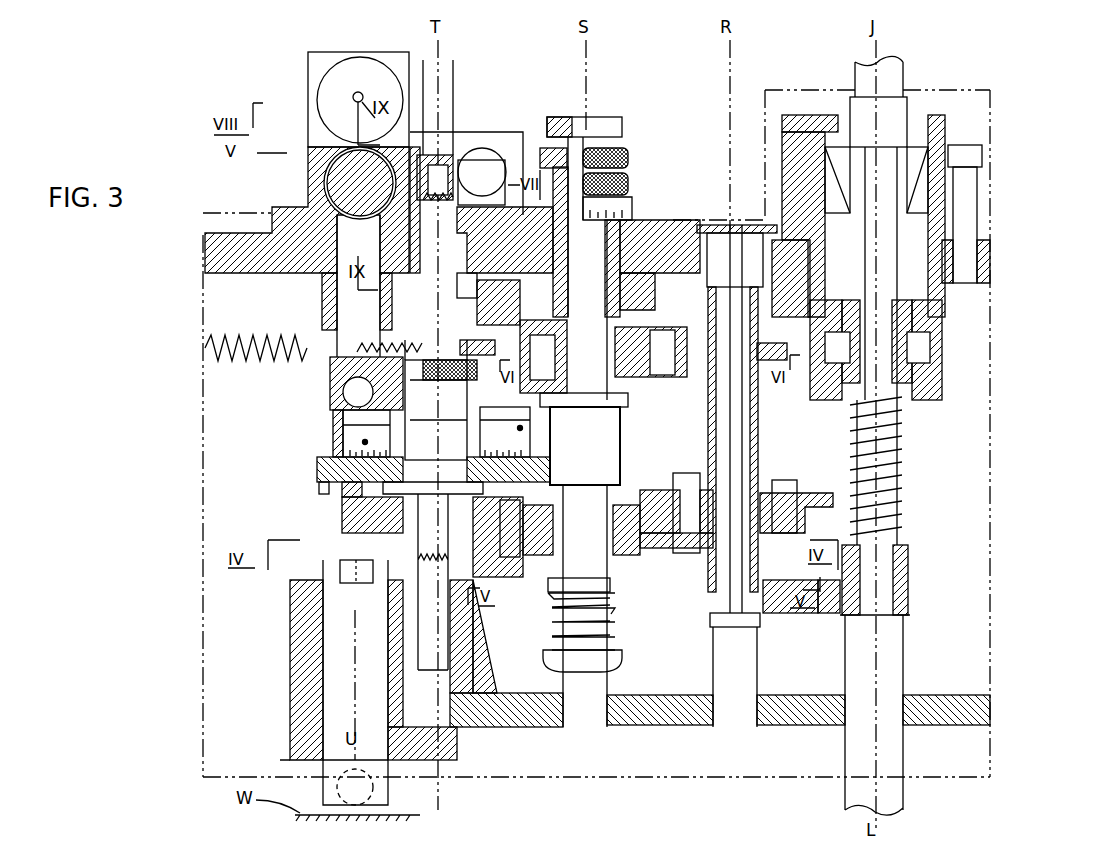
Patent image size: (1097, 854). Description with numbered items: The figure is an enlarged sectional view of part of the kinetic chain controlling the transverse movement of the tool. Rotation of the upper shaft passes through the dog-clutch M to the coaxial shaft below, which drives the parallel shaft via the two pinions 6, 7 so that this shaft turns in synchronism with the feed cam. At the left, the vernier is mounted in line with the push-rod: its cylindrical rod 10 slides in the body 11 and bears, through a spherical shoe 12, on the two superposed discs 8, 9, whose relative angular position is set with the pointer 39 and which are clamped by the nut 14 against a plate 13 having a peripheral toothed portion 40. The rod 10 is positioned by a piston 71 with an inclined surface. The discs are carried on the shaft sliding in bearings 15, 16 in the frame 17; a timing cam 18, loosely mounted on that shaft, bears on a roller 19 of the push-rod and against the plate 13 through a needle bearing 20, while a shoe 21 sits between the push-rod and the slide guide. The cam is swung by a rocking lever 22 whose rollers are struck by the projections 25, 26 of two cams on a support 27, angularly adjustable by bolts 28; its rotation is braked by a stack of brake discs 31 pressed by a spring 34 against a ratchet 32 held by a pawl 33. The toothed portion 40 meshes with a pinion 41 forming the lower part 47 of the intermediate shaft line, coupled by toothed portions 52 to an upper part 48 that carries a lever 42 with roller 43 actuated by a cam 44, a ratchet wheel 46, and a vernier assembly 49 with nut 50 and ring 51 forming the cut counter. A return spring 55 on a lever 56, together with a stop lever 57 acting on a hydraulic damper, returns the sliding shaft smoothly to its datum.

The pinion 6 is at (910, 598).
The pinion 7 is at (830, 613).
The disc 8 is at (345, 433).
The disc 9 is at (338, 418).
The cylindrical rod 10 is at (358, 312).
The body 11 is at (330, 293).
The spherical shoe 12 is at (350, 394).
The plate 13 is at (319, 488).
The nut 14 is at (330, 380).
The bearing 15 is at (415, 635).
The bearing 16 is at (490, 308).
The frame 17 is at (520, 730).
The timing cam 18 is at (342, 522).
The roller 19 is at (353, 585).
The needle bearing 20 is at (342, 495).
The shoe 21 is at (370, 790).
The rocking lever 22 is at (660, 505).
The projection 25 is at (668, 595).
The projection 26 is at (820, 493).
The support 27 is at (795, 613).
The bolt 28 is at (785, 482).
The brake discs 31 is at (635, 590).
The ratchet 32 is at (545, 590).
The pawl 33 is at (700, 595).
The spring 34 is at (545, 651).
The pointer 39 is at (350, 439).
The peripheral toothed portion 40 is at (317, 470).
The pinion 41 is at (600, 449).
The lever 42 is at (530, 320).
The roller 43 is at (668, 378).
The cam 44 is at (775, 343).
The ratchet wheel 46 is at (640, 318).
The lower part 47 is at (570, 606).
The upper part 48 is at (580, 268).
The vernier assembly 49 is at (632, 200).
The nut 50 is at (630, 155).
The ring 51 is at (610, 128).
The internally- and externally-toothed portions 52 is at (630, 410).
The return spring 55 is at (262, 345).
The lever 56 is at (478, 340).
The stop lever 57 is at (483, 158).
The piston 71 is at (345, 180).
The dog-clutch M is at (975, 262).